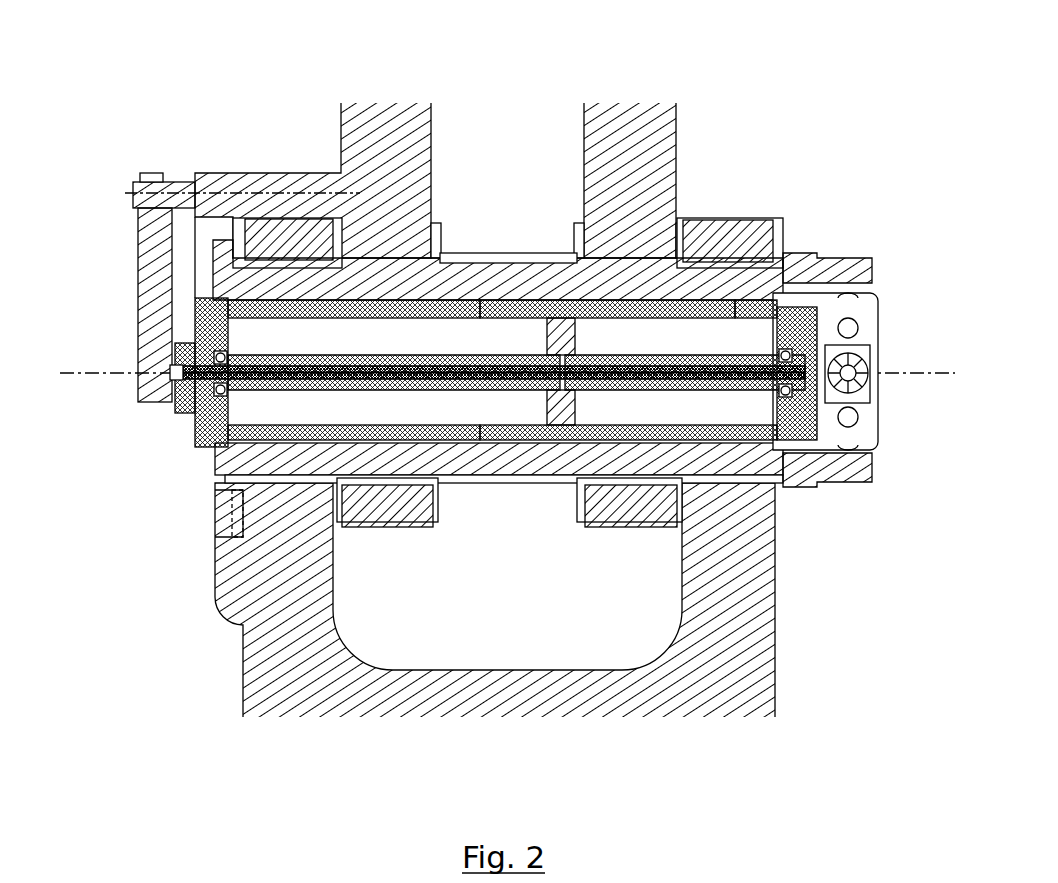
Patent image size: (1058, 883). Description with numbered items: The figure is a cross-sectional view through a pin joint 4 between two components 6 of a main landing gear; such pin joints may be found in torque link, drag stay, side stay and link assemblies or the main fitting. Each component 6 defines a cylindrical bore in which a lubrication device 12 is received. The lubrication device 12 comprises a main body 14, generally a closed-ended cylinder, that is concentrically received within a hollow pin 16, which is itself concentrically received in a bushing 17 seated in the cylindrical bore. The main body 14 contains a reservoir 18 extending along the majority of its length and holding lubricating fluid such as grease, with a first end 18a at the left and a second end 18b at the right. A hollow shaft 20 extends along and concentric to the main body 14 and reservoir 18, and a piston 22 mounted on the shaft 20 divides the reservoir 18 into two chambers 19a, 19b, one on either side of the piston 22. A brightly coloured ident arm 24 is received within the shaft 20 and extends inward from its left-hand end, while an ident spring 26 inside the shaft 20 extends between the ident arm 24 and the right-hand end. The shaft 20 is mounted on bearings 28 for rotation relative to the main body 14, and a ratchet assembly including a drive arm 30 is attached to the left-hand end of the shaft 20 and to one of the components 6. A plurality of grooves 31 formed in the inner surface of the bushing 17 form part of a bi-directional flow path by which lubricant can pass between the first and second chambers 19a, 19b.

The pin joint 4 is at (150, 687).
The component 6 is at (400, 178).
The lubrication device 12 is at (165, 464).
The main body 14 is at (750, 447).
The hollow pin 16 is at (677, 280).
The bushing 17 is at (500, 257).
The reservoir 18 is at (678, 412).
The first end of the reservoir 18a is at (265, 330).
The second end of the reservoir 18b is at (760, 337).
The first chamber 19a is at (302, 412).
The second chamber 19b is at (708, 332).
The shaft 20 is at (540, 365).
The piston 22 is at (572, 340).
The ident arm 24 is at (255, 374).
The ident spring 26 is at (735, 367).
The bearings 28 is at (208, 360).
The drive arm 30 is at (155, 263).
The grooves 31 is at (510, 480).